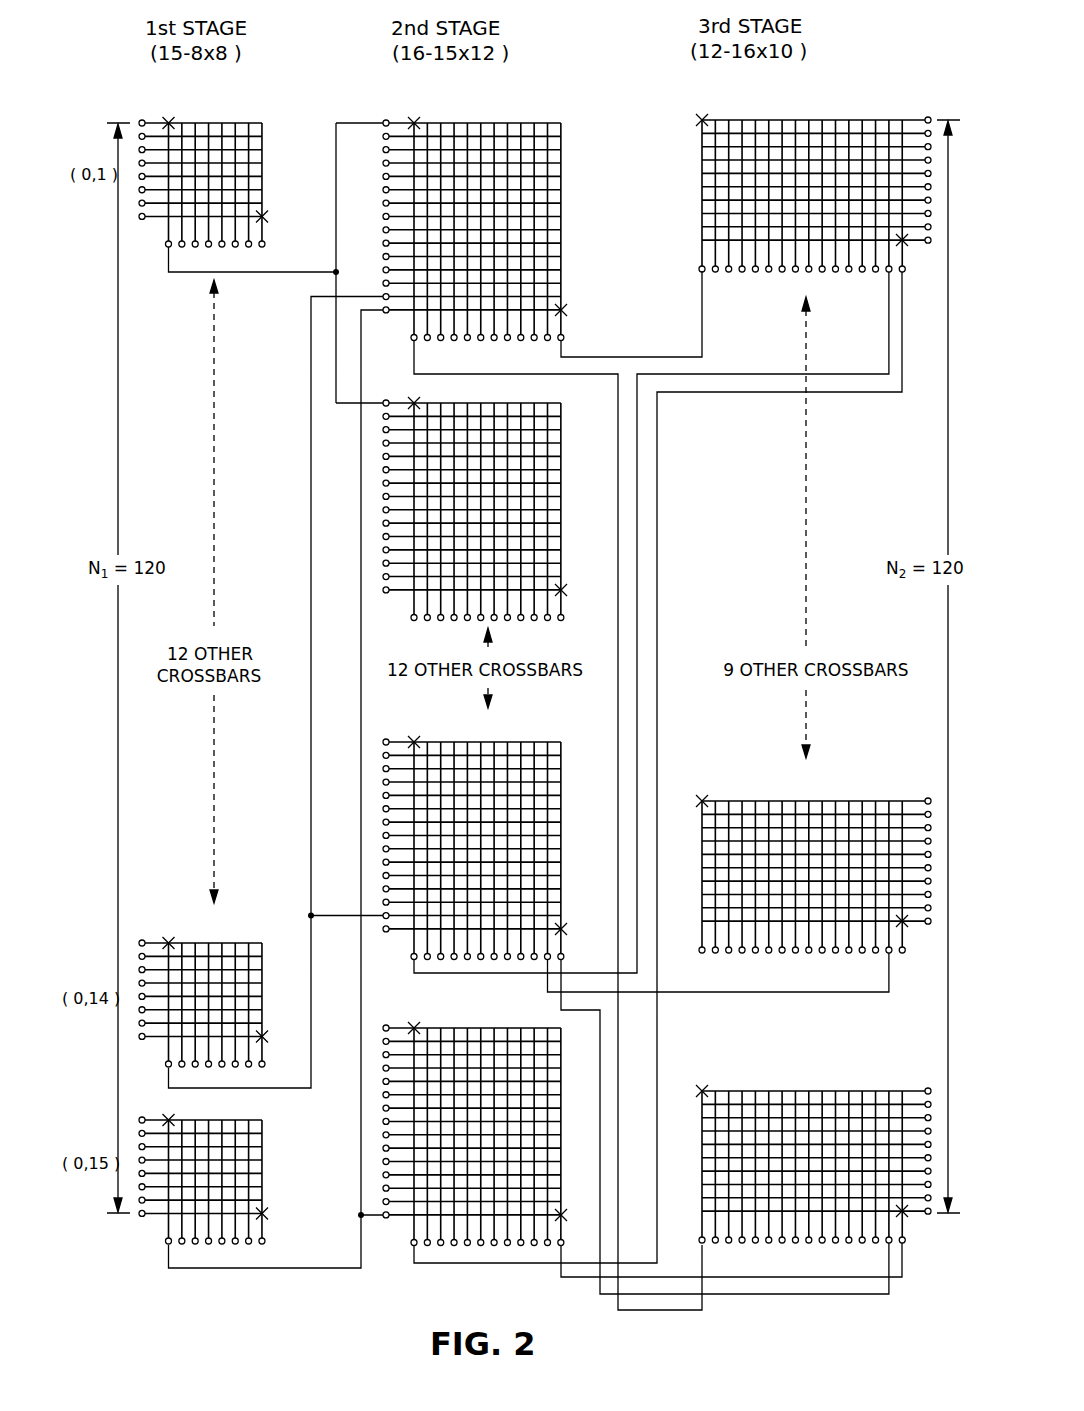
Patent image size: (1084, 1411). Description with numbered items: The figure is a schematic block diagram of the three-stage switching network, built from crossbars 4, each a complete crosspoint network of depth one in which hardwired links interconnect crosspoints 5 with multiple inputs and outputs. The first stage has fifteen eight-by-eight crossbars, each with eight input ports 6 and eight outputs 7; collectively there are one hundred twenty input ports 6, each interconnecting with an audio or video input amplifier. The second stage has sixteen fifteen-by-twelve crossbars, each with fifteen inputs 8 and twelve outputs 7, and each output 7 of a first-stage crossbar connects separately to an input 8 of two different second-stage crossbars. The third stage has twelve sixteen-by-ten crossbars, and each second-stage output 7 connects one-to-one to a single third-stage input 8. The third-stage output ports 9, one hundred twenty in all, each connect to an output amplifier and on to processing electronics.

The crossbar 4 is at (712, 1155).
The crosspoint 5 is at (702, 1090).
The input port 6 is at (141, 1216).
The output 7 is at (565, 1243).
The input 8 is at (700, 1242).
The output port 9 is at (927, 1088).